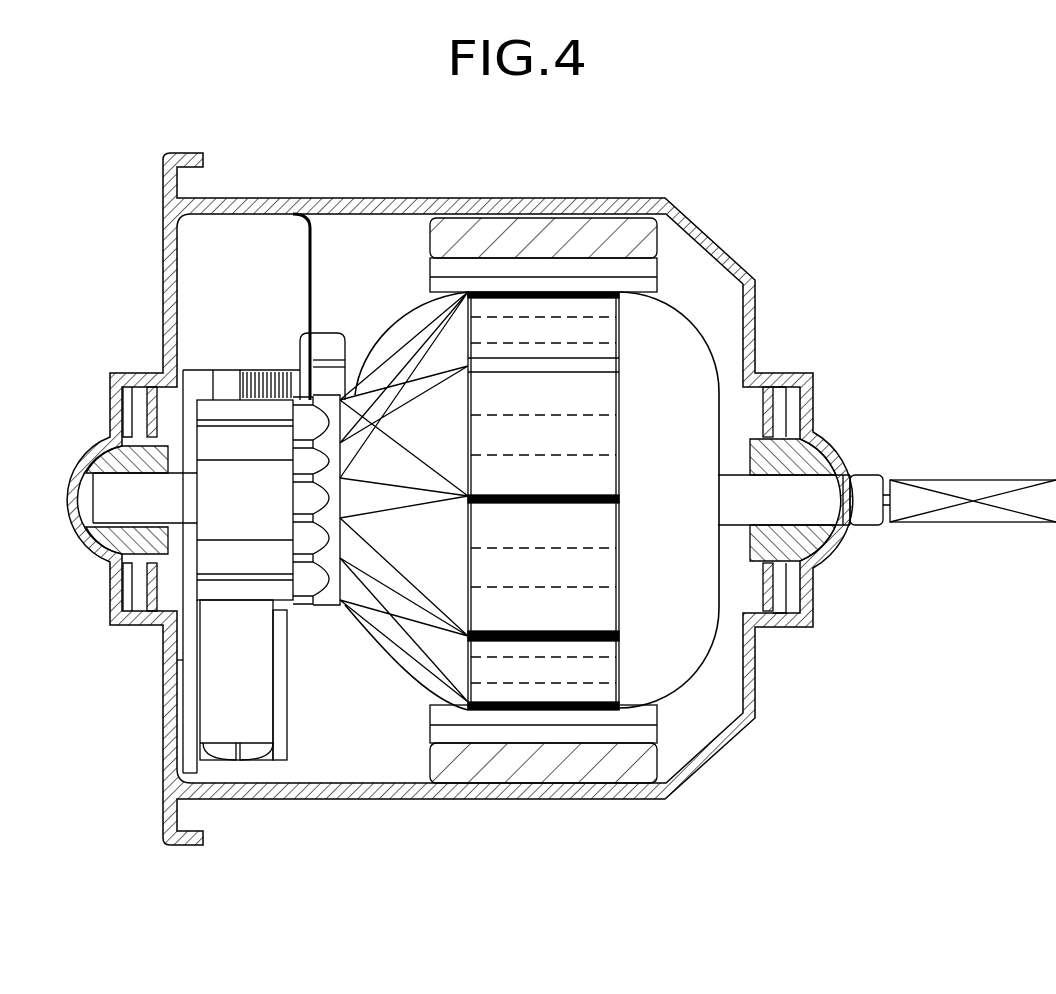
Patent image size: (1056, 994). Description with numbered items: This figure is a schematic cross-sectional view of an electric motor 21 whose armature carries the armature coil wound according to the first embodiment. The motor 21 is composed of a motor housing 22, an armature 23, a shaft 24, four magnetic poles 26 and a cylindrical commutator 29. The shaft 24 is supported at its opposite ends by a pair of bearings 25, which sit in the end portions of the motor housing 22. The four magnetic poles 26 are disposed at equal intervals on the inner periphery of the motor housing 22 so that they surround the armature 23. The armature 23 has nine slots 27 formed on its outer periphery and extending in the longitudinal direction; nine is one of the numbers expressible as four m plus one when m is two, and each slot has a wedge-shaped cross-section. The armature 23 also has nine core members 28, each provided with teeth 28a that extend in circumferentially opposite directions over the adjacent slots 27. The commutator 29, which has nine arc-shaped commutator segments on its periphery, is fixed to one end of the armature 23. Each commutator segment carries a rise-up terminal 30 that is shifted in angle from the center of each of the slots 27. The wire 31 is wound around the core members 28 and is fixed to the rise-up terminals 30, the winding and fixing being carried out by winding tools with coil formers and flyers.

The motor 21 is at (487, 507).
The motor housing 22 is at (490, 800).
The armature 23 is at (574, 500).
The shaft 24 is at (830, 490).
The bearings 25 is at (117, 542).
The magnetic poles 26 is at (513, 240).
The slots 27 is at (620, 300).
The core members 28 is at (598, 428).
The teeth 28a is at (600, 391).
The commutator 29 is at (236, 590).
The rise-up terminal 30 is at (293, 440).
The wire 31 is at (405, 325).